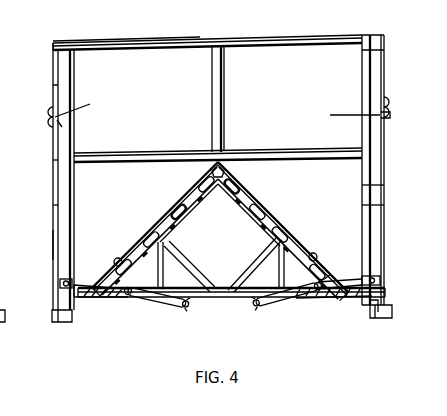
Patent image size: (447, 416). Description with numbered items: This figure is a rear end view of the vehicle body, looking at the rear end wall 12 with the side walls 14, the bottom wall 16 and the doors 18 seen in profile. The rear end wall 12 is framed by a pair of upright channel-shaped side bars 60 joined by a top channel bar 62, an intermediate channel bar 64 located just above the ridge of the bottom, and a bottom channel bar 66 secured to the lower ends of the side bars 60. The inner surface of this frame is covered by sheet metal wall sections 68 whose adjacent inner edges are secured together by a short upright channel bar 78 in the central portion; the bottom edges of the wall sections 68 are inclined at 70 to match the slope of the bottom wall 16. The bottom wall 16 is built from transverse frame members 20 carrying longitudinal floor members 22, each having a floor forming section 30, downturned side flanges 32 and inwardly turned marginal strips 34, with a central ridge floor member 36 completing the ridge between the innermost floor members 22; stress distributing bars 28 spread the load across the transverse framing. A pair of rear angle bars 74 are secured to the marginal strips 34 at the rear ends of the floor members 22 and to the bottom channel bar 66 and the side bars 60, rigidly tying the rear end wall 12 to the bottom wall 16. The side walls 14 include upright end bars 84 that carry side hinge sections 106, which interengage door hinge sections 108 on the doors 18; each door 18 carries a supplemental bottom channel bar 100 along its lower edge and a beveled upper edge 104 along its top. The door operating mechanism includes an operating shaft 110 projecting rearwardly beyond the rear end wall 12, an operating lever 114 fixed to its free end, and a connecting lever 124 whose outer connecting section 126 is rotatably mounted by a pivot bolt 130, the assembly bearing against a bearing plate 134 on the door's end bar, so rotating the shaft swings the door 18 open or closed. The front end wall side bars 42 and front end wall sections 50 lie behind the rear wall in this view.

The rear end wall 12 is at (372, 192).
The side wall 14 is at (0, 43).
The bottom wall 16 is at (286, 218).
The door 18 is at (54, 253).
The transverse frame member 20 is at (298, 298).
The floor member 22 is at (155, 236).
The stress distributing bar 28 is at (255, 258).
The floor forming section 30 is at (116, 261).
The side flange 32 is at (186, 206).
The marginal strip 34 is at (235, 180).
The central ridge floor member 36 is at (224, 160).
The side bar 42 is at (0, 162).
The front end wall section 50 is at (0, 207).
The side bar 60 is at (67, 71).
The top channel bar 62 is at (160, 41).
The intermediate channel bar 64 is at (137, 137).
The bottom channel bar 66 is at (218, 300).
The sheet metal wall section 68 is at (57, 118).
The inclined edge 70 is at (328, 258).
The rear angle bar 74 is at (247, 205).
The short upright channel bar 78 is at (223, 67).
The upright end bar 84 is at (53, 88).
The supplemental bottom channel bar 100 is at (55, 318).
The beveled upper edge 104 is at (2, 141).
The side hinge section 106 is at (383, 100).
The door hinge section 108 is at (383, 118).
The operating shaft 110 is at (128, 294).
The operating lever 114 is at (158, 302).
The connecting lever 124 is at (84, 295).
The connecting section 126 is at (378, 303).
The pivot bolt 130 is at (383, 278).
The bearing plate 134 is at (60, 283).